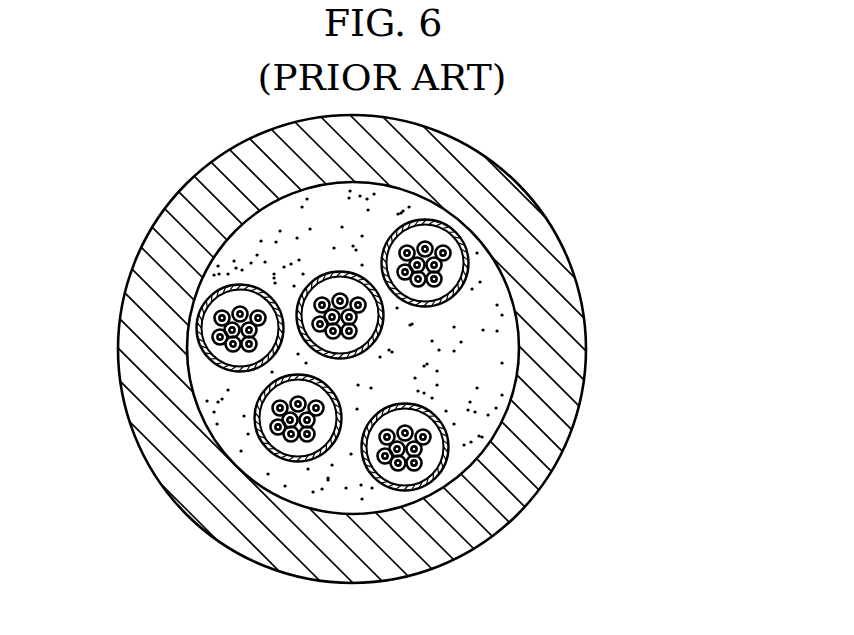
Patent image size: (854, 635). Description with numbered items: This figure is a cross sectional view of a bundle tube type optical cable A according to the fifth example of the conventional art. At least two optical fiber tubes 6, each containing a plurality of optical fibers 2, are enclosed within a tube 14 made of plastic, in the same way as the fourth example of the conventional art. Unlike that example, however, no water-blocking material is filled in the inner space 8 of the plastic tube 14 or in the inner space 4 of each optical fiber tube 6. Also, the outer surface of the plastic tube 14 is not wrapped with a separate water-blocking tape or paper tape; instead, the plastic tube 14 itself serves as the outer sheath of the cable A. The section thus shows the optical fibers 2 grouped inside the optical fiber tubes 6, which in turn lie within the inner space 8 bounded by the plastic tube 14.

The optical fiber cable A is at (427, 359).
The tube made of plastic 14 is at (543, 243).
The inner space of the plastic tube 8 is at (482, 333).
The inner space of the optical fiber tube 4 is at (400, 419).
The optical fiber tube 6 is at (372, 478).
The optical fiber 2 is at (406, 458).